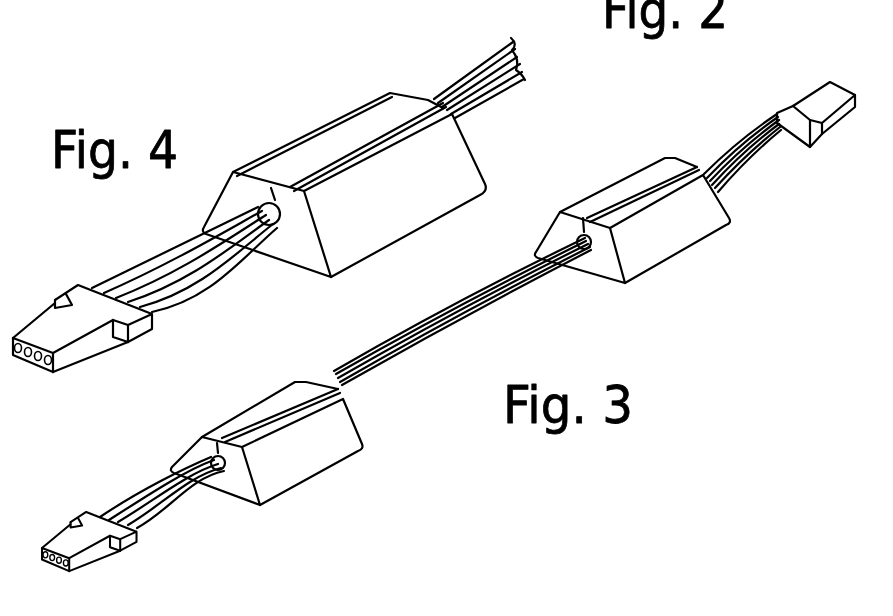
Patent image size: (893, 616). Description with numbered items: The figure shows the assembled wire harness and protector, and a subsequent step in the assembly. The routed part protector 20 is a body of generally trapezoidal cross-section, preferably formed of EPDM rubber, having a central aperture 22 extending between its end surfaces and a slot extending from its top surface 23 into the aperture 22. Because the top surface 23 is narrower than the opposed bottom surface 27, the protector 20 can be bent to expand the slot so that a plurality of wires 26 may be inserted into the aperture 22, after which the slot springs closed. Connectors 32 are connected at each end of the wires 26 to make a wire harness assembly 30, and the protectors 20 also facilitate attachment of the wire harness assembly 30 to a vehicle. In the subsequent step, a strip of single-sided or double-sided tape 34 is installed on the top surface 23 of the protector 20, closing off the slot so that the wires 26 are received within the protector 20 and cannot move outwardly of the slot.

In FIG. 4, the routed part protector 20 is at (365, 78).
In FIG. 3, the routed part protector 20 is at (222, 423).
In FIG. 2, the central aperture 22 is at (773, 0).
In FIG. 4, the top surface 23 is at (266, 157).
In FIG. 4, the wires 26 is at (517, 60).
In FIG. 3, the wires 26 is at (427, 343).
In FIG. 2, the bottom surface 27 is at (493, 0).
In FIG. 4, the wire harness assembly 30 is at (485, 150).
In FIG. 3, the wire harness assembly 30 is at (573, 303).
In FIG. 4, the connectors 32 is at (43, 337).
In FIG. 3, the connectors 32 is at (70, 543).
In FIG. 4, the tape 34 is at (328, 147).